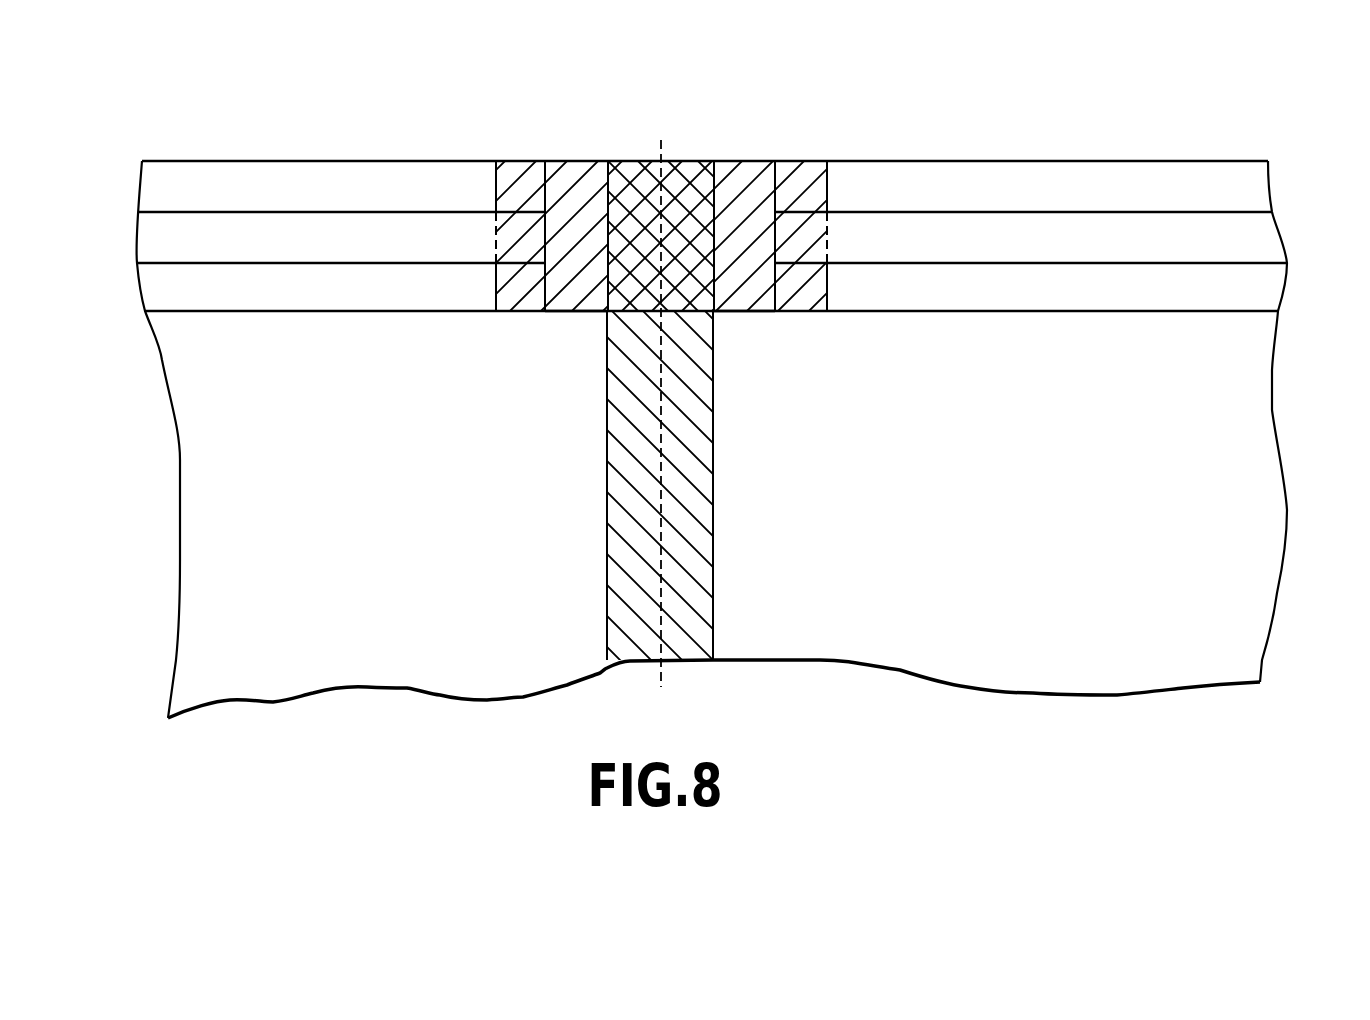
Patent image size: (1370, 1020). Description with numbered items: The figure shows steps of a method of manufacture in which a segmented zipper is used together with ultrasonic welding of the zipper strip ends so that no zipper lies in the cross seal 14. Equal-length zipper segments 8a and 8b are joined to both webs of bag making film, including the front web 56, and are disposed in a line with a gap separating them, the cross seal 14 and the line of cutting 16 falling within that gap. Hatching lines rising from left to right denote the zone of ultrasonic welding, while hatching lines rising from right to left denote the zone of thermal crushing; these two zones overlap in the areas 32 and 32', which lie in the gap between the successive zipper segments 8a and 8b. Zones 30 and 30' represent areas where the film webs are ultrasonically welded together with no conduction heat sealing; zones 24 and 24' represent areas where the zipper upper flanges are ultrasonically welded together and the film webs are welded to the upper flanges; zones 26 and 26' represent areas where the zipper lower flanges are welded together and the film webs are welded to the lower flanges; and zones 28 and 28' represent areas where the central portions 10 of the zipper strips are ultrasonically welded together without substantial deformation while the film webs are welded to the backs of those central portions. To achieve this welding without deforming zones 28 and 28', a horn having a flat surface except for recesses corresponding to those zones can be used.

The zipper segment 8a is at (1233, 161).
The zipper segment 8b is at (193, 161).
The central portion 10 is at (203, 267).
The cross seal 14 is at (713, 522).
The line of cutting 16 is at (658, 558).
The zone 24 is at (554, 205).
The zone 24' is at (848, 210).
The zone 26 is at (550, 339).
The zone 26' is at (767, 339).
The zone 28 is at (440, 288).
The zone 28' is at (865, 292).
The zone 30 is at (575, 202).
The zone 30' is at (791, 207).
The area 32 is at (660, 202).
The area 32' is at (717, 202).
The front web 56 is at (217, 598).